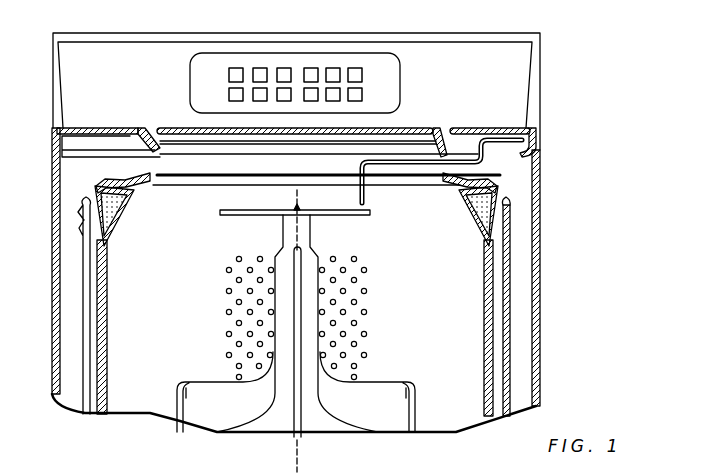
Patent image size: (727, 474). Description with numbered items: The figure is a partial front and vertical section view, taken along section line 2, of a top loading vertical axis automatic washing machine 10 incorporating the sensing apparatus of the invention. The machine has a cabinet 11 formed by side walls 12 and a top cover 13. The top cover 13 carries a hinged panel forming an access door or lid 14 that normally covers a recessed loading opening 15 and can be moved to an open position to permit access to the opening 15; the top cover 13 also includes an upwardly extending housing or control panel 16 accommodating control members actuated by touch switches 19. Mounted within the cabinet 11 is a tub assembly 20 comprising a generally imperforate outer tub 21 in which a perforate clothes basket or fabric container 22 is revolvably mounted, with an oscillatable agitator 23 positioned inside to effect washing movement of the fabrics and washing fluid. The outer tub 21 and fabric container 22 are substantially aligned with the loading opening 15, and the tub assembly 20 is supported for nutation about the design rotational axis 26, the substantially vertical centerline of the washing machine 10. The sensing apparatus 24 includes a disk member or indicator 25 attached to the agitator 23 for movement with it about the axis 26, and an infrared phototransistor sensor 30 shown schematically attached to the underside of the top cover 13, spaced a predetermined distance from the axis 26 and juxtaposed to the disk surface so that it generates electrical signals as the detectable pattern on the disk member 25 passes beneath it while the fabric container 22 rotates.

The section line 2- 2 is at (563, 186).
The vertical axis automatic washing machine 10 is at (565, 39).
The cabinet 11 is at (68, 418).
The side walls 12 is at (50, 334).
The top cover 13 is at (88, 127).
The access door or lid 14 is at (436, 140).
The recessed loading opening 15 is at (180, 147).
The control panel 16 is at (517, 101).
The touch switches 19 is at (284, 66).
The tub assembly 20 is at (513, 382).
The imperforate outer tub 21 is at (512, 331).
The perforate fabric container 22 is at (105, 331).
The agitator 23 is at (403, 384).
The sensing apparatus 24 is at (395, 205).
The disk member or indicator 25 is at (221, 216).
The design rotational axis 26 is at (300, 466).
The infrared phototransistor sensor 30 is at (360, 200).